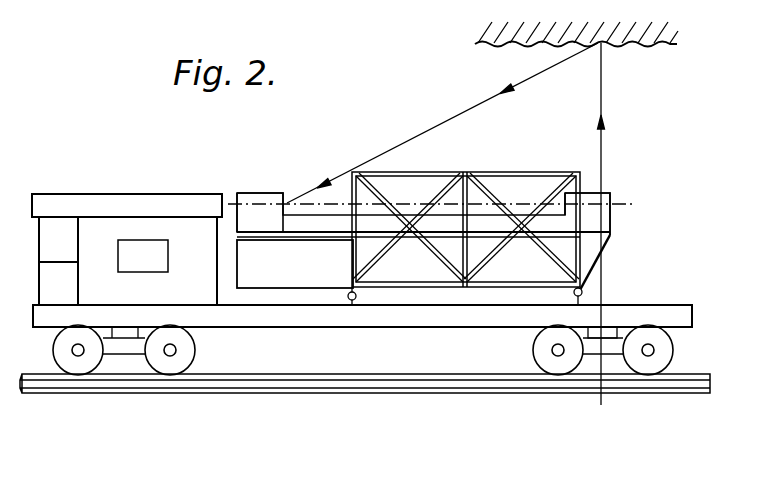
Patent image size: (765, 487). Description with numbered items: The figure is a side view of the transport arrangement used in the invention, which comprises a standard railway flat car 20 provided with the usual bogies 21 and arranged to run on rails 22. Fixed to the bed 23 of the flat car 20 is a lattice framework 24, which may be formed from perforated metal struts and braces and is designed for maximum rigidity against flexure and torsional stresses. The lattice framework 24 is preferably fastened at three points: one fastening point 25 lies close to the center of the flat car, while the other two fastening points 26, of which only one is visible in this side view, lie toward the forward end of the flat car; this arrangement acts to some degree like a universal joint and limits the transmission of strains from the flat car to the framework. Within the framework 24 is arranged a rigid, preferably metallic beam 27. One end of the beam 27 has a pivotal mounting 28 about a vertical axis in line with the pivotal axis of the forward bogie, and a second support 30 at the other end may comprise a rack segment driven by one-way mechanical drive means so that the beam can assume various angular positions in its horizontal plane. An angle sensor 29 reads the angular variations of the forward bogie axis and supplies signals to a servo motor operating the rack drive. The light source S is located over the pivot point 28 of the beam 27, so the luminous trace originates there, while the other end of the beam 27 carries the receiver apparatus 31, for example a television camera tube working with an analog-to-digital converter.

The flat car 20 is at (695, 312).
The bogies 21 is at (196, 349).
The rails 22 is at (322, 393).
The bed 23 is at (619, 304).
The lattice framework 24 is at (503, 171).
The fastening point 25 is at (349, 301).
The fastening points 26 is at (582, 290).
The rigid beam 27 is at (412, 220).
The pivotal mounting 28 is at (621, 233).
The angle sensor 29 is at (606, 330).
The second support 30 is at (267, 232).
The receiver apparatus 31 is at (250, 192).
The light source S is at (607, 193).